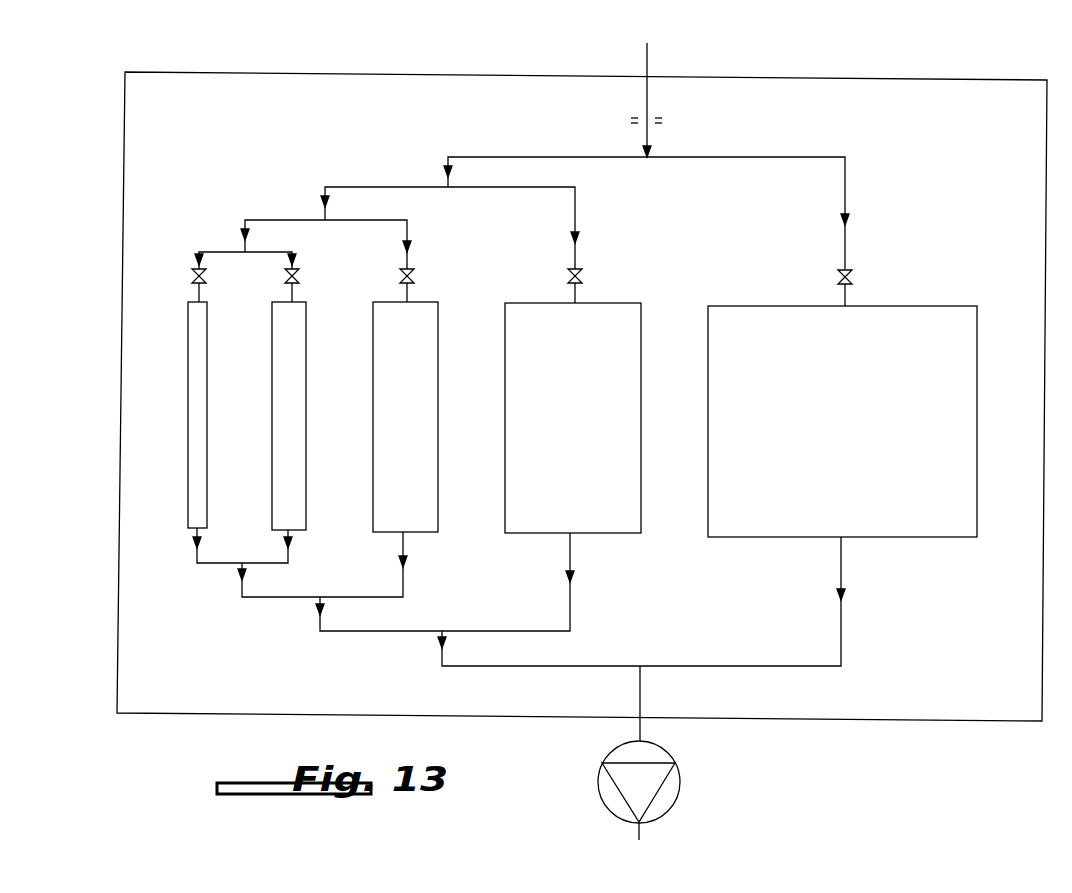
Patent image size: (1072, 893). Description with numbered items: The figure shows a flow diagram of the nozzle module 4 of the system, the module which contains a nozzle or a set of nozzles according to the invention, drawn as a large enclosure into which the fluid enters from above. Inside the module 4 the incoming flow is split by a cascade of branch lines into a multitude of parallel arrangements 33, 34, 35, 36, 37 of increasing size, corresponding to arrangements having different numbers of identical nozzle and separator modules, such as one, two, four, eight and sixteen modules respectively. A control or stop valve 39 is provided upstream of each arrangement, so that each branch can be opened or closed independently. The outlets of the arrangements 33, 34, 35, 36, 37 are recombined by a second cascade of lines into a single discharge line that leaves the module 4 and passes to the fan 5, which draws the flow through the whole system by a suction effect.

The module 4 is at (88, 126).
The fan 5 is at (670, 786).
The first filter column 33 is at (190, 442).
The second filter column 34 is at (282, 432).
The third filter column 35 is at (387, 432).
The fourth filter vessel 36 is at (523, 432).
The fifth filter vessel 37 is at (720, 433).
The valve 39 is at (415, 278).